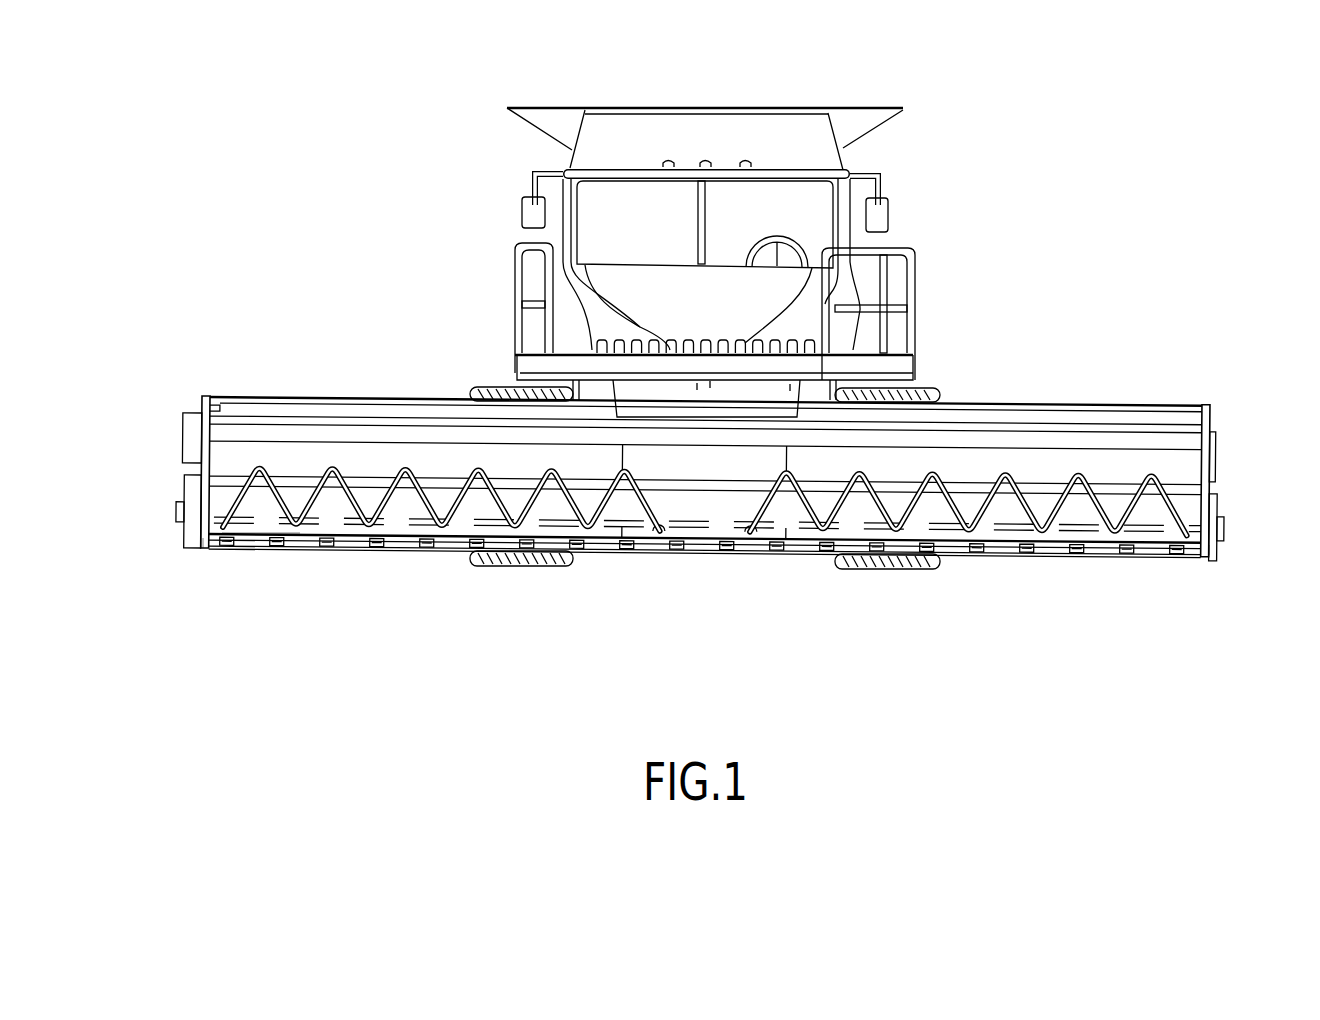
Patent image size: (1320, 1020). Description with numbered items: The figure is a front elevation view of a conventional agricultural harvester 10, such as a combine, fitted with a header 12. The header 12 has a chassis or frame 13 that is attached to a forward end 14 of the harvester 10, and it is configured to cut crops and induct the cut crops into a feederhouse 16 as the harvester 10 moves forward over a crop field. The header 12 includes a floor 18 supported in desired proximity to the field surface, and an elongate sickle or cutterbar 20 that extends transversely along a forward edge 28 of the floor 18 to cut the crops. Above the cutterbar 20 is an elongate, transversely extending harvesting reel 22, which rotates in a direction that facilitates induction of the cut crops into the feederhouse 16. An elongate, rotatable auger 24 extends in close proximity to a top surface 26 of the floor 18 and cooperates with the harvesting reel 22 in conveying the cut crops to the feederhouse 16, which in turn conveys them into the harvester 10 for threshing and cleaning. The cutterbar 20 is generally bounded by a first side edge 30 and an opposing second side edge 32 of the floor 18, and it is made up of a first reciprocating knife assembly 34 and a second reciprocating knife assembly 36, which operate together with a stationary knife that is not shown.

The agricultural harvester 10 is at (338, 123).
The header 12 is at (219, 366).
The chassis or frame 13 is at (193, 472).
The forward end 14 is at (530, 385).
The feederhouse 16 is at (800, 390).
The floor 18 is at (441, 499).
The cutterbar 20 is at (702, 545).
The harvesting reel 22 is at (1213, 483).
The auger 24 is at (968, 504).
The top surface 26 is at (260, 533).
The forward edge 28 is at (408, 537).
The first side edge 30 is at (192, 530).
The second side edge 32 is at (1220, 535).
The first reciprocating knife assembly 34 is at (205, 608).
The second reciprocating knife assembly 36 is at (1205, 609).